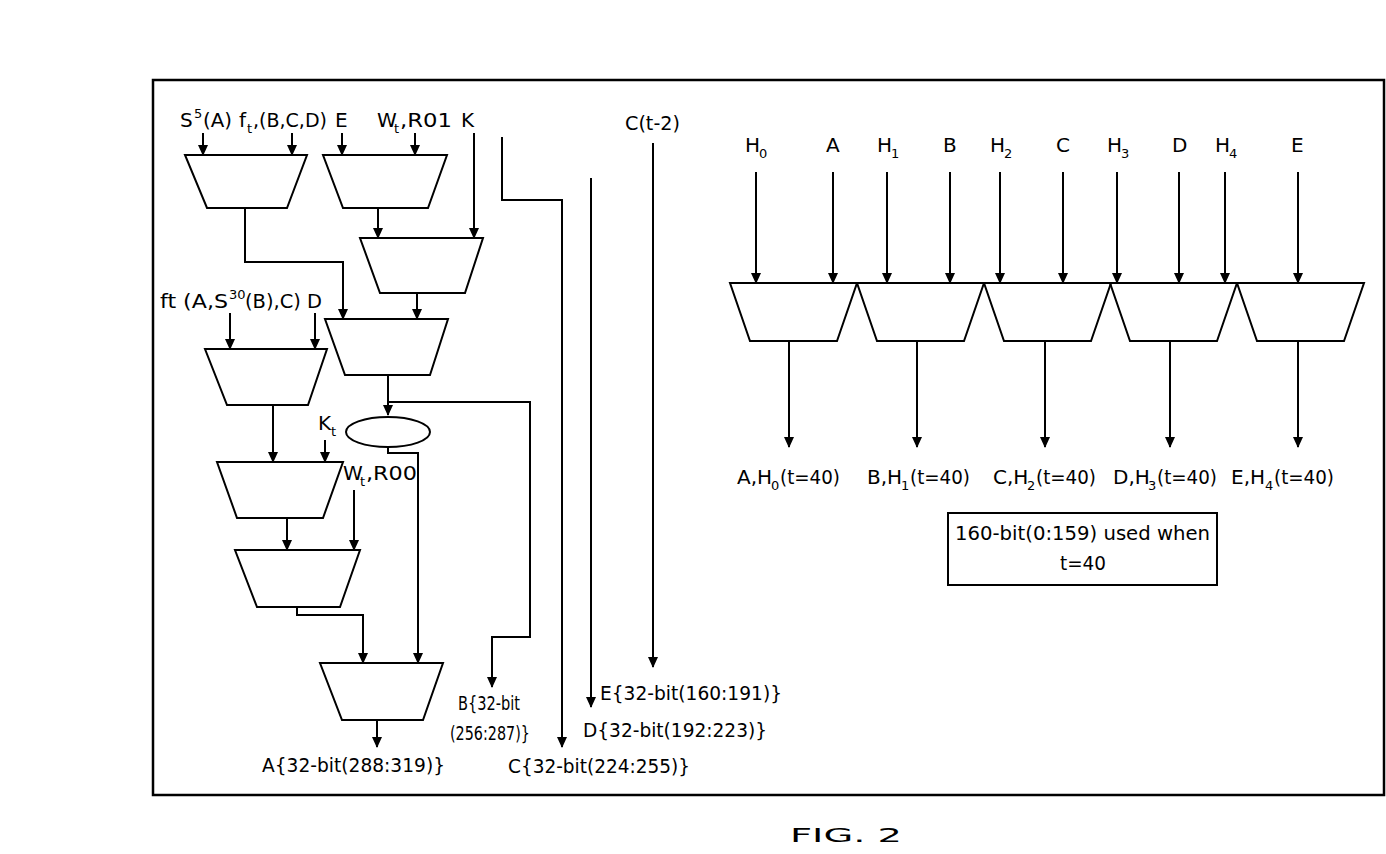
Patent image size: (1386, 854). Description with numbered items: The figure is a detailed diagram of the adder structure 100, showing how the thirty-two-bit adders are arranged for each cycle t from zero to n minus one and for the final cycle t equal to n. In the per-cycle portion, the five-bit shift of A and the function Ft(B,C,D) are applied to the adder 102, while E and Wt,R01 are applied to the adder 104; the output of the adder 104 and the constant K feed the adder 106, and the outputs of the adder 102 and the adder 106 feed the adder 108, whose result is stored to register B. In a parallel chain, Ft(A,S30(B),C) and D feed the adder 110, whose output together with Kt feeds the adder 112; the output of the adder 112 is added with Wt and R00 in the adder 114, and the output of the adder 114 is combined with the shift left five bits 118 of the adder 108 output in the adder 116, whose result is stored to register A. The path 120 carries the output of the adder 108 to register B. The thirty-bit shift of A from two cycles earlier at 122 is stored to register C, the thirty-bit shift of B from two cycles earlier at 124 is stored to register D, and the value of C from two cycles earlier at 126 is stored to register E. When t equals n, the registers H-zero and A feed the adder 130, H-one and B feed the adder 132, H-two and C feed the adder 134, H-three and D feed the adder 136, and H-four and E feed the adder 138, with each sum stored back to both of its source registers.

The adder structure 100 is at (1130, 80).
The adder 102 is at (197, 185).
The adder 104 is at (436, 190).
The adder 106 is at (473, 270).
The adder 108 is at (441, 343).
The adder 110 is at (213, 368).
The adder 112 is at (229, 495).
The adder 114 is at (253, 597).
The adder 116 is at (330, 692).
The shift left 5 bits 118 is at (427, 440).
The B output path (32-bit 256:287) 120 is at (530, 538).
The 30-bit shift of A(t−2) 122 is at (562, 305).
The 30-bit shift of B(t−2) 124 is at (591, 445).
The C(t−2) 126 is at (653, 407).
The adder 130 is at (780, 283).
The adder 132 is at (903, 283).
The adder 134 is at (1014, 283).
The adder 136 is at (1131, 283).
The adder 138 is at (1248, 283).